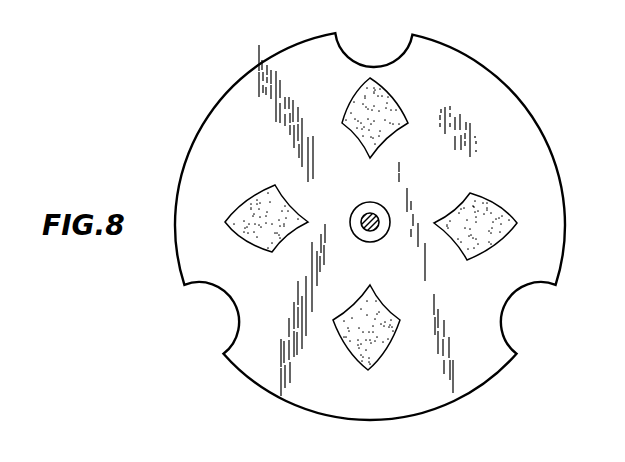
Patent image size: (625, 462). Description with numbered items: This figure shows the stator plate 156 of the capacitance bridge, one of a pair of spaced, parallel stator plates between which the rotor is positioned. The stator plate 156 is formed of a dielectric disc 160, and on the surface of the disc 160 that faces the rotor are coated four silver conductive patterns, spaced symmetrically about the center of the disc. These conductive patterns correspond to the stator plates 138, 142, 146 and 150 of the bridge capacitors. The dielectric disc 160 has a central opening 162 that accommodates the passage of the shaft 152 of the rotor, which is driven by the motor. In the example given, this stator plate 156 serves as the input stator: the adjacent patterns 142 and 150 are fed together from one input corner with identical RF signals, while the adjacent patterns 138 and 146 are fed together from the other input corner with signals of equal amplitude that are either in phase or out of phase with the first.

The stator plate 156 is at (485, 62).
The dielectric disc 160 is at (242, 112).
The stator plate (conductive pattern) 146 is at (390, 115).
The stator plate (conductive pattern) 142 is at (252, 203).
The stator plate (conductive pattern) 138 is at (490, 213).
The stator plate (conductive pattern) 150 is at (383, 338).
The central opening 162 is at (355, 236).
The shaft 152 is at (378, 216).